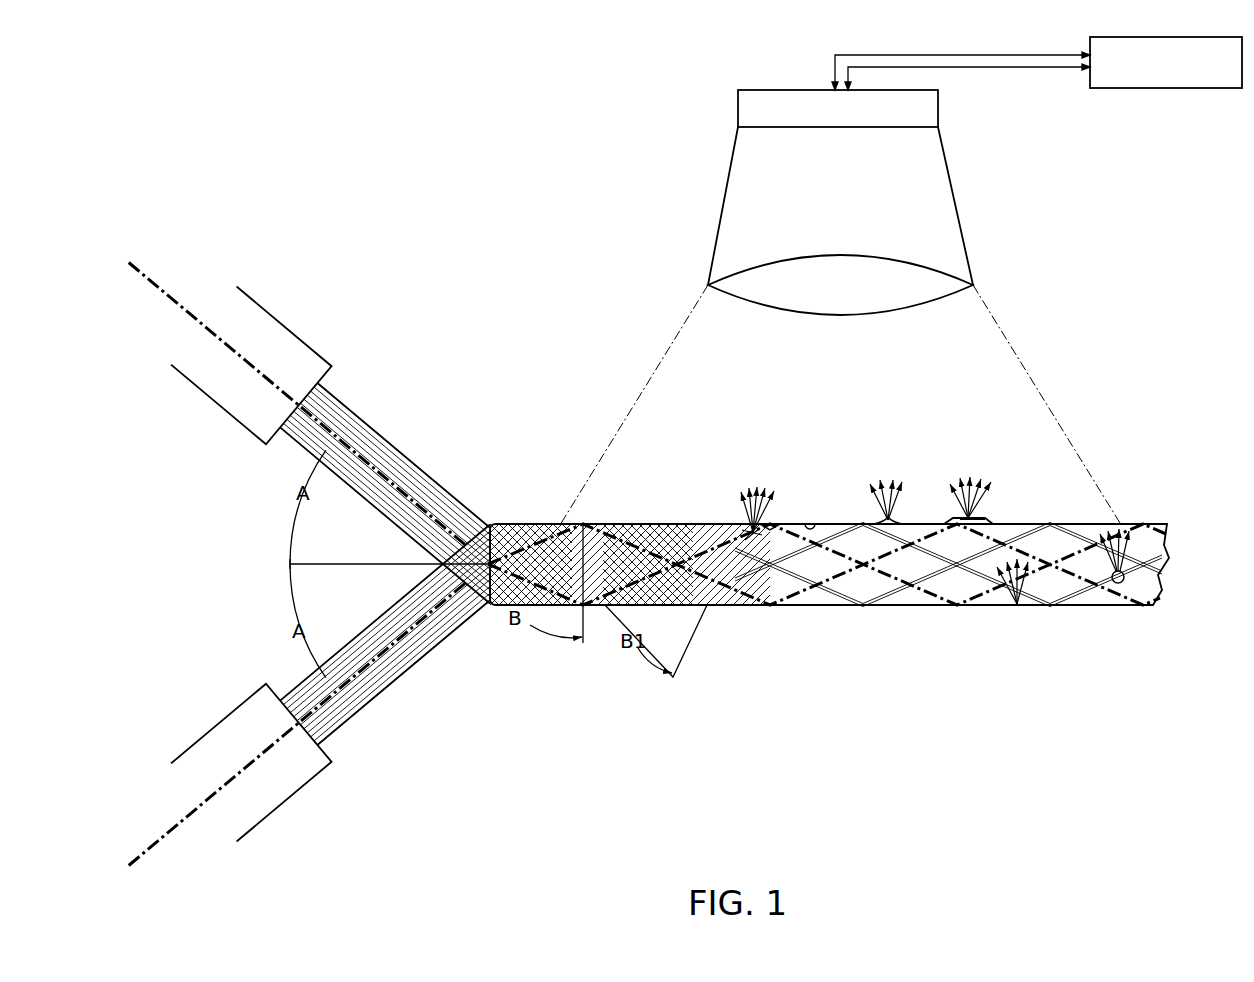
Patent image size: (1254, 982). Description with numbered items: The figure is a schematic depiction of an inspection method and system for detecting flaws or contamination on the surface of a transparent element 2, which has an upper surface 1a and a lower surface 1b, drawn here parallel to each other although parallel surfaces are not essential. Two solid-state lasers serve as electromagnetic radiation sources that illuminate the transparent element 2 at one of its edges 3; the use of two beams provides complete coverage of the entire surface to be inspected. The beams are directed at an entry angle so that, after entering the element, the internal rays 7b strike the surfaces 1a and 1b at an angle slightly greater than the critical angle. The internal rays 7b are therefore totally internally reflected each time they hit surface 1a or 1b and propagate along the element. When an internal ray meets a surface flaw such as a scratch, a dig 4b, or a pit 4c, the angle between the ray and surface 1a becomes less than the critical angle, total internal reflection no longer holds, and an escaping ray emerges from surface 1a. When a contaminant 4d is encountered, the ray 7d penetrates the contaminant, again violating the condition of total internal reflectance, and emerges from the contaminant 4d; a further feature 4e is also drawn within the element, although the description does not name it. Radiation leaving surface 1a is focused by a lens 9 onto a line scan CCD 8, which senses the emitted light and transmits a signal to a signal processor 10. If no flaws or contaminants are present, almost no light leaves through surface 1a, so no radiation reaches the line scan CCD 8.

The surface 1a is at (1077, 523).
The surface 1b is at (897, 607).
The transparent element 2 is at (910, 567).
The edge 3 is at (500, 525).
The dig 4b is at (807, 523).
The pit 4c is at (888, 517).
The contaminant 4d is at (983, 523).
The internal bubble defect 4e is at (1133, 525).
The internal ray 7b is at (565, 525).
The ray 7d is at (967, 517).
The line scan CCD 8 is at (917, 108).
The lens 9 is at (913, 290).
The signal processor 10 is at (1133, 78).